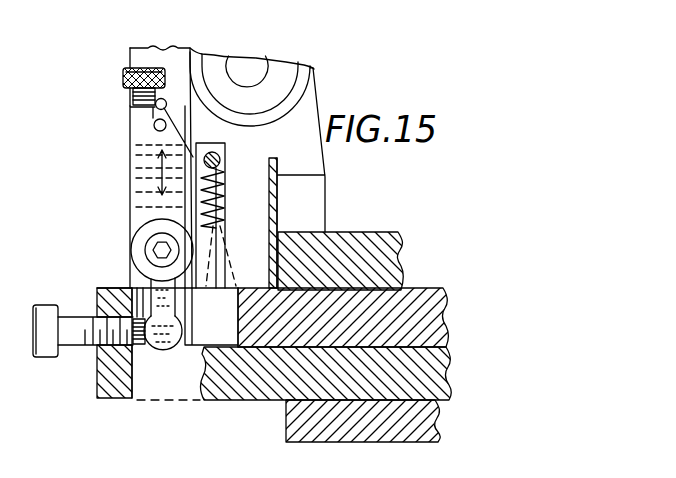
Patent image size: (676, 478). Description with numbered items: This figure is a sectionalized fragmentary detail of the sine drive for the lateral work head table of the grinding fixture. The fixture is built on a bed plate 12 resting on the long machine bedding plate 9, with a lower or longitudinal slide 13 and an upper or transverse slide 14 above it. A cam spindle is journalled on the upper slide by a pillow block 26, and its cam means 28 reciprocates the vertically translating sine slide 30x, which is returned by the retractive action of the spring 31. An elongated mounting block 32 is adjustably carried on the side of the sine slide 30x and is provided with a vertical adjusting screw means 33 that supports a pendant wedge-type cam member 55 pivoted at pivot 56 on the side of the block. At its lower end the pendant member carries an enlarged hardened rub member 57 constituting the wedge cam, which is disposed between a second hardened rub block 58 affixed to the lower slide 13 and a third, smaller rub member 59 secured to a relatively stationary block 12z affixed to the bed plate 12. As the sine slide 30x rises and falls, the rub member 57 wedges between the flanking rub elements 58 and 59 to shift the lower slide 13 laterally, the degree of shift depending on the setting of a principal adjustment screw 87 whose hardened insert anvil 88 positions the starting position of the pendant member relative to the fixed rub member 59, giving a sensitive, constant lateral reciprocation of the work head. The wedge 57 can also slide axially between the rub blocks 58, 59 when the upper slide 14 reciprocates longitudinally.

The sine slide 30x is at (165, 57).
The vertical adjusting screw means 33 is at (125, 80).
The mounting block 32 is at (137, 126).
The cam means 28 is at (306, 82).
The pillow block 26 is at (305, 147).
The spring 31 is at (226, 206).
The upper slide 14 is at (372, 242).
The lower slide 13 is at (418, 306).
The bed plate 12 is at (250, 385).
The machine bedding plate 9 is at (335, 420).
The stationary block 12z is at (100, 383).
The principal adjustment screw 87 is at (81, 316).
The hardened insert anvil 88 is at (146, 352).
The rub member 59 is at (136, 278).
The wedge-type cam member 55 is at (145, 234).
The pivot 56 is at (162, 241).
The rub member 57 is at (176, 317).
The rub block 58 is at (184, 351).